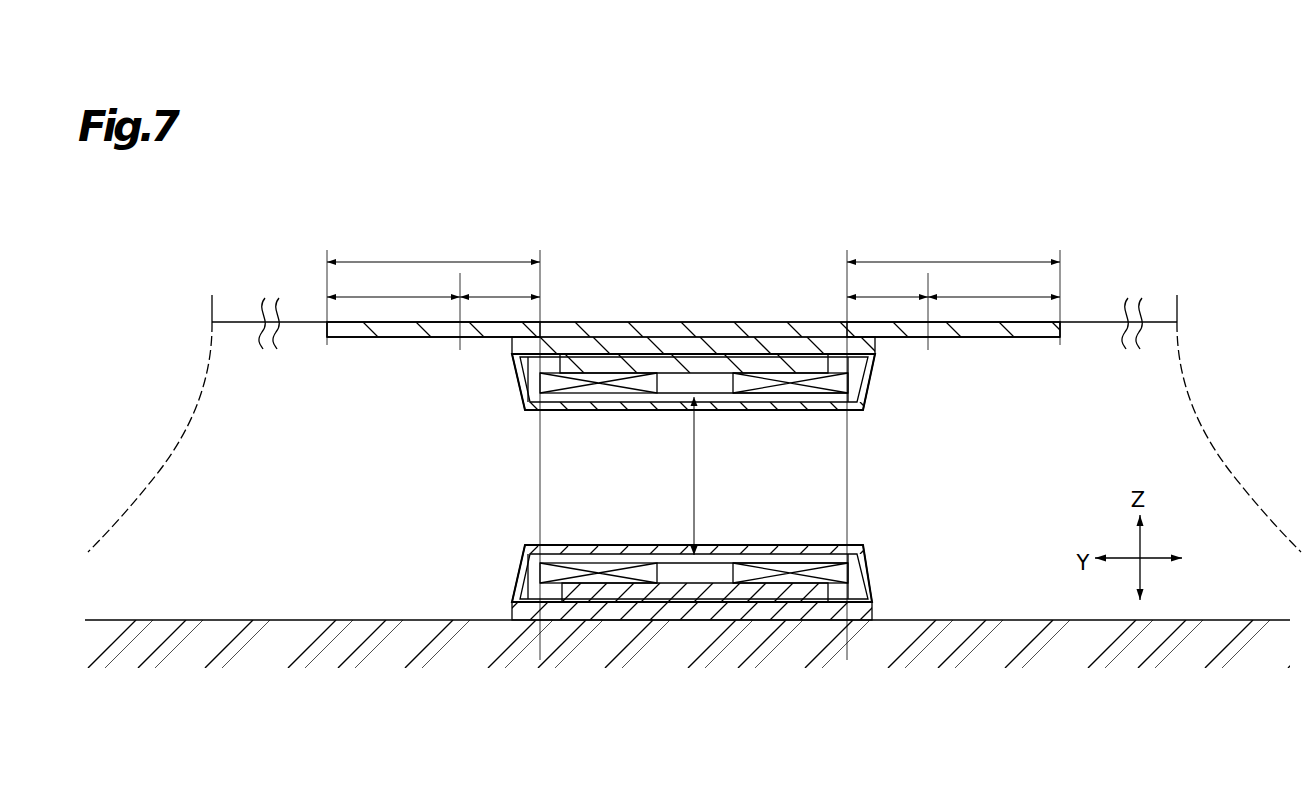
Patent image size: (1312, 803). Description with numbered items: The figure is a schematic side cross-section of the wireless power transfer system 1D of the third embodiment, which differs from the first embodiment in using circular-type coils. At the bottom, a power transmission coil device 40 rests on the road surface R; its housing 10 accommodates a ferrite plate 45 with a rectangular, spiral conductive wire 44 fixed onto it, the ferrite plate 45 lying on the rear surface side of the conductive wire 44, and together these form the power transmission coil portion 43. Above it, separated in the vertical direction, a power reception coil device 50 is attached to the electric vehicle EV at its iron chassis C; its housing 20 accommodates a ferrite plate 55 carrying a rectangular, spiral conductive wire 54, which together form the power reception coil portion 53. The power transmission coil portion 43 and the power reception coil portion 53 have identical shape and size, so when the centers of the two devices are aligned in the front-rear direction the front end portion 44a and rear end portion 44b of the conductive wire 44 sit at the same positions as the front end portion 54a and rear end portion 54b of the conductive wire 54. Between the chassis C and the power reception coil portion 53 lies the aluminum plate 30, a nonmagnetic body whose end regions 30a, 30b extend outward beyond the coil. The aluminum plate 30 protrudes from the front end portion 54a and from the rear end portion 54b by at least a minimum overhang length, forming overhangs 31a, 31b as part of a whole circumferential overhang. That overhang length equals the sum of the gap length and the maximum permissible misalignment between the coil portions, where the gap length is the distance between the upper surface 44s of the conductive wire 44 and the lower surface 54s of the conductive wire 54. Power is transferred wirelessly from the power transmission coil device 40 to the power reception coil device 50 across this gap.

The wireless power transfer system 1D is at (604, 224).
The housing 10 is at (878, 584).
The housing 20 is at (870, 404).
The aluminum plate 30 is at (398, 341).
The first end portion of plate 30a is at (315, 338).
The second end portion of plate 30b is at (1062, 332).
The overhang 31a is at (412, 338).
The overhang 31b is at (1013, 338).
The power transmission coil device 40 is at (689, 613).
The power transmission coil portion 43 is at (689, 622).
The conductive wire 44 is at (638, 590).
The front end portion 44a is at (530, 573).
The rear end portion 44b is at (866, 560).
The surface 44s is at (805, 562).
The ferrite plate 45 is at (687, 603).
The power reception coil device 50 is at (703, 362).
The power reception coil portion 53 is at (682, 347).
The conductive wire 54 is at (758, 322).
The front end portion 54a is at (516, 385).
The rear end portion 54b is at (855, 385).
The surface 54s is at (805, 393).
The ferrite plate 55 is at (706, 322).
The chassis C is at (248, 328).
The electric vehicle EV is at (1170, 432).
The road surface R is at (290, 620).